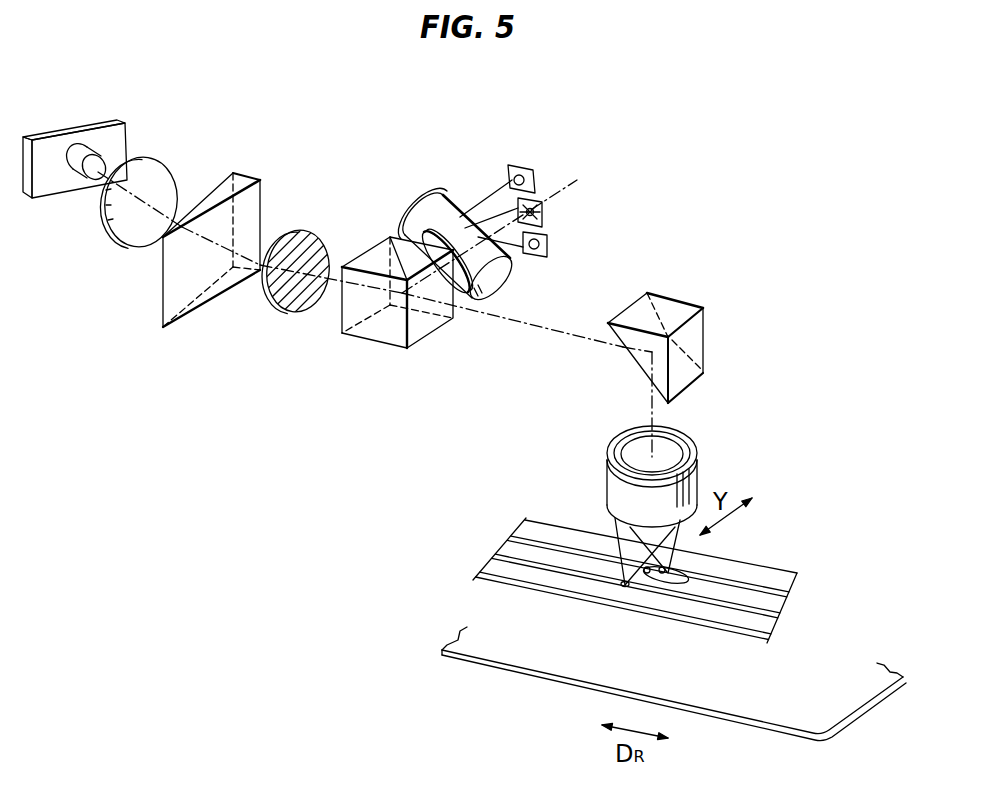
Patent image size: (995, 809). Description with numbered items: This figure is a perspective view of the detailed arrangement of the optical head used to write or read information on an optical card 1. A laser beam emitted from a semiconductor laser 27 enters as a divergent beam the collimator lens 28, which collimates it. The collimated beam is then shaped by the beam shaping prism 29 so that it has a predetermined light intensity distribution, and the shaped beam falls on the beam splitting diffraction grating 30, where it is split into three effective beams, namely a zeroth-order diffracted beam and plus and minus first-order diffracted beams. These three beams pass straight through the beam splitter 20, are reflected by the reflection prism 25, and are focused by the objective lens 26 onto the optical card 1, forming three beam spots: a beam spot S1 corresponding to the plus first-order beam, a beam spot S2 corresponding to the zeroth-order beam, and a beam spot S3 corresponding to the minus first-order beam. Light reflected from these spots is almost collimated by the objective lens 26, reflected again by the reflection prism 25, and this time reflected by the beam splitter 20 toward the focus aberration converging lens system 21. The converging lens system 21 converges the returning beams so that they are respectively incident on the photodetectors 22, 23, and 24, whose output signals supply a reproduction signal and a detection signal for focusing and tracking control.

The optical card 1 is at (674, 684).
The beam splitter 20 is at (393, 315).
The focus aberration converging lens system 21 is at (446, 224).
The photodetector 22 is at (537, 156).
The photodetector 23 is at (559, 210).
The photodetector 24 is at (565, 249).
The reflection prism 25 is at (656, 325).
The objective lens 26 is at (672, 493).
The semiconductor laser 27 is at (75, 126).
The collimator lens 28 is at (150, 176).
The beam shaping prism 29 is at (226, 225).
The beam splitting diffraction grating 30 is at (298, 247).
The beam spot S1 is at (600, 613).
The beam spot S2 is at (648, 614).
The beam spot S3 is at (708, 550).